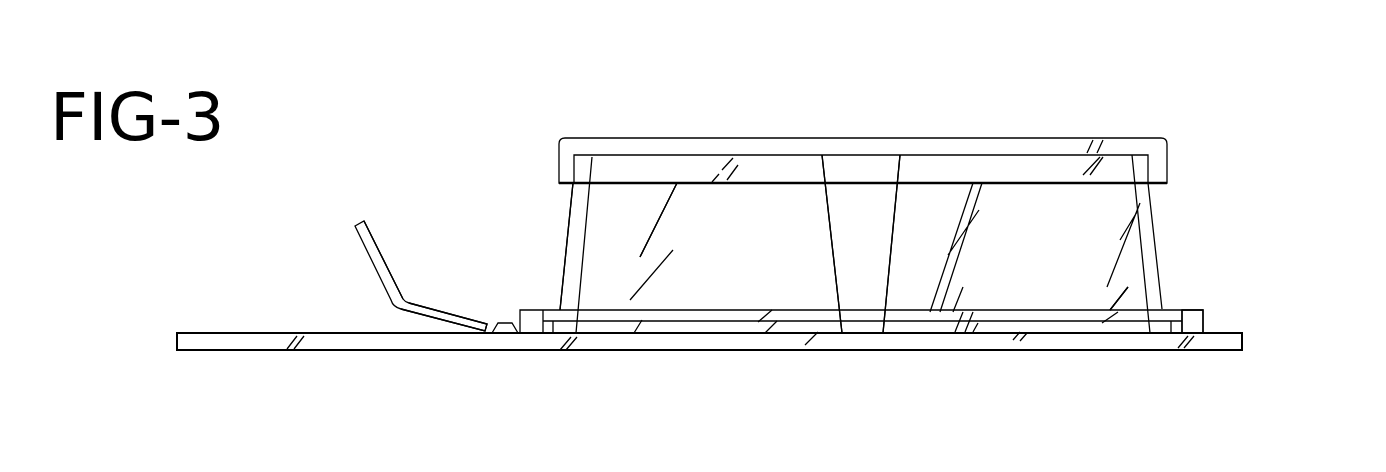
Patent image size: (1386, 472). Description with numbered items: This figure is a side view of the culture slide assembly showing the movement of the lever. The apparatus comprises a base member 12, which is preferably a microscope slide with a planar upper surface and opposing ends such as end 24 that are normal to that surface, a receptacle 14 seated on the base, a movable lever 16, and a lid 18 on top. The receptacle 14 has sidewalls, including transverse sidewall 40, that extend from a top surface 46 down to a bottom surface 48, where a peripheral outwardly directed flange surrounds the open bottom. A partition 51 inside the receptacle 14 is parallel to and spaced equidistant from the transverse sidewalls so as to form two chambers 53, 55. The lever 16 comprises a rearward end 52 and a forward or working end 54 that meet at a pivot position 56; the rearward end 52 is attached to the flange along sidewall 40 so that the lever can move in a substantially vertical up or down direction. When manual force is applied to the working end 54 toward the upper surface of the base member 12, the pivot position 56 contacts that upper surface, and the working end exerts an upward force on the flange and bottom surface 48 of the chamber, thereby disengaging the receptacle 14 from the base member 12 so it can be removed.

The base member 12 is at (1243, 337).
The receptacle 14 is at (1155, 205).
The lever 16 is at (356, 231).
The lid 18 is at (1112, 137).
The end 24 is at (1190, 308).
The transverse sidewall 40 is at (570, 212).
The top surface 46 is at (688, 210).
The bottom surface 48 is at (687, 330).
The partition 51 is at (862, 200).
The rearward end 52 is at (512, 323).
The chamber 53 is at (823, 208).
The working end 54 is at (382, 257).
The chamber 55 is at (898, 203).
The pivot position 56 is at (487, 331).